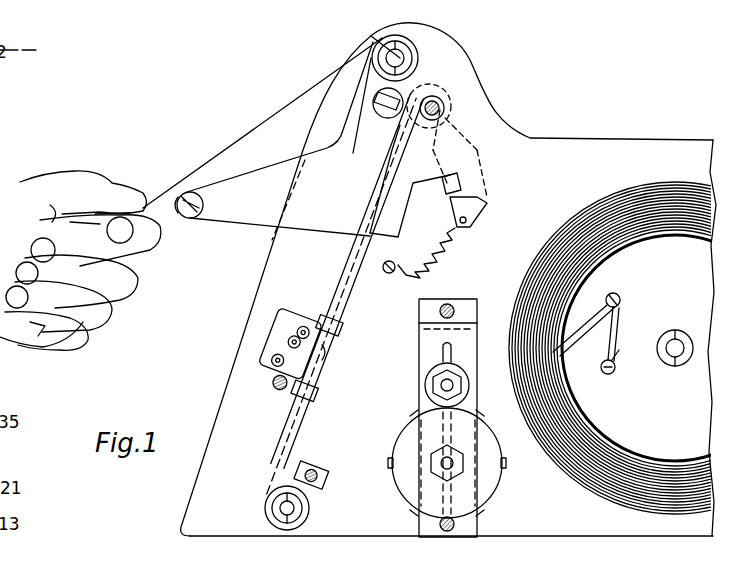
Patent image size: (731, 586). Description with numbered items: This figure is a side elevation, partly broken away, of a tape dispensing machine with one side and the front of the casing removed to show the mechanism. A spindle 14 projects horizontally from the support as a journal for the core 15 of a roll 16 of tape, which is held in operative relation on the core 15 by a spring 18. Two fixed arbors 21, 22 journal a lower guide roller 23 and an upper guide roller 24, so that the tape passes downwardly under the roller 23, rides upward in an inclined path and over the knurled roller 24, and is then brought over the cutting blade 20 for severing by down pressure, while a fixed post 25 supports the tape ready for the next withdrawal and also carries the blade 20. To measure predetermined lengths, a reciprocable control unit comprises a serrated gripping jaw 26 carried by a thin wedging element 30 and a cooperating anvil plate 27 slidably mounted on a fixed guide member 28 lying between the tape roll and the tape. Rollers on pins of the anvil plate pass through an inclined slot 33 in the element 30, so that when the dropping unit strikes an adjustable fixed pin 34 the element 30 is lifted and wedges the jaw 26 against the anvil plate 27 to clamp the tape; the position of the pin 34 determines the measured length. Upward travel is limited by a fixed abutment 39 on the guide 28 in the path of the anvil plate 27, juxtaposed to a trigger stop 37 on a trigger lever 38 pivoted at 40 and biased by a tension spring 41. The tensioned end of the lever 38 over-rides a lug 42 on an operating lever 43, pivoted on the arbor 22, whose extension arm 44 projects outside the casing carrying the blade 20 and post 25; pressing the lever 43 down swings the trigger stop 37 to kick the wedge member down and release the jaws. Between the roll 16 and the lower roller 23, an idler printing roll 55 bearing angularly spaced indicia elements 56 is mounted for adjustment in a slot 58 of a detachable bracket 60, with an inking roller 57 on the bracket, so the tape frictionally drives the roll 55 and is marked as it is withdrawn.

The spindle 14 is at (672, 352).
The core 15 is at (620, 348).
The roll of tape 16 is at (516, 364).
The spring 18 is at (576, 328).
The cutting blade 20 is at (184, 216).
The fixed arbor 21 is at (293, 503).
The fixed arbor 22 is at (392, 60).
The lower guide roller 23 is at (265, 511).
The upper guide roller 24 is at (385, 46).
The fixed post 25 is at (205, 205).
The gripping jaw 26 is at (372, 42).
The anvil plate 27 is at (325, 355).
The guide member 28 is at (350, 300).
The wedging element 30 is at (278, 342).
The slot 33 is at (307, 318).
The fixed pin 34 is at (283, 392).
The trigger stop 37 is at (388, 106).
The trigger lever 38 is at (390, 112).
The fixed abutment 39 is at (427, 86).
The pivot 40 is at (437, 110).
The tension spring 41 is at (418, 255).
The lug 42 is at (450, 194).
The operating lever 43 is at (410, 100).
The extension arm 44 is at (285, 175).
The idler printing roll 55 is at (412, 440).
The indicia transmitting elements 56 is at (482, 470).
The inking roller 57 is at (428, 377).
The slot 58 is at (455, 345).
The bracket 60 is at (428, 325).